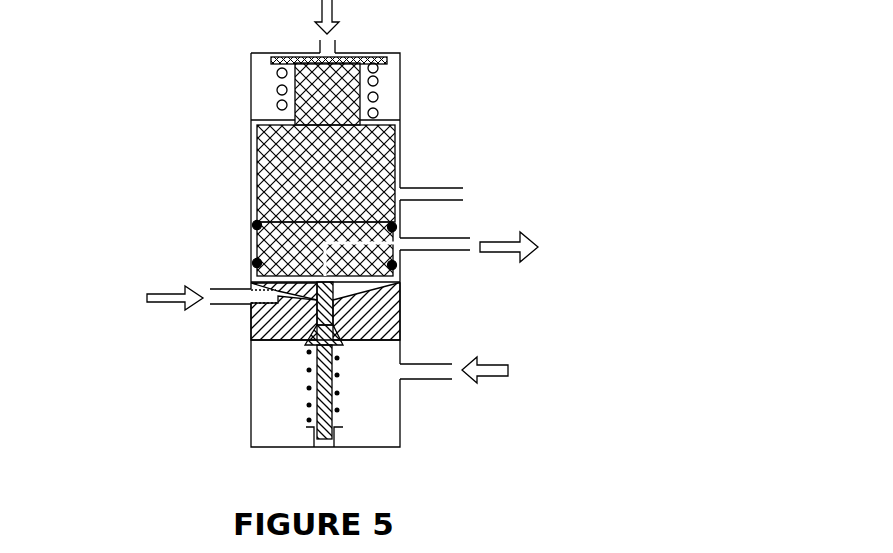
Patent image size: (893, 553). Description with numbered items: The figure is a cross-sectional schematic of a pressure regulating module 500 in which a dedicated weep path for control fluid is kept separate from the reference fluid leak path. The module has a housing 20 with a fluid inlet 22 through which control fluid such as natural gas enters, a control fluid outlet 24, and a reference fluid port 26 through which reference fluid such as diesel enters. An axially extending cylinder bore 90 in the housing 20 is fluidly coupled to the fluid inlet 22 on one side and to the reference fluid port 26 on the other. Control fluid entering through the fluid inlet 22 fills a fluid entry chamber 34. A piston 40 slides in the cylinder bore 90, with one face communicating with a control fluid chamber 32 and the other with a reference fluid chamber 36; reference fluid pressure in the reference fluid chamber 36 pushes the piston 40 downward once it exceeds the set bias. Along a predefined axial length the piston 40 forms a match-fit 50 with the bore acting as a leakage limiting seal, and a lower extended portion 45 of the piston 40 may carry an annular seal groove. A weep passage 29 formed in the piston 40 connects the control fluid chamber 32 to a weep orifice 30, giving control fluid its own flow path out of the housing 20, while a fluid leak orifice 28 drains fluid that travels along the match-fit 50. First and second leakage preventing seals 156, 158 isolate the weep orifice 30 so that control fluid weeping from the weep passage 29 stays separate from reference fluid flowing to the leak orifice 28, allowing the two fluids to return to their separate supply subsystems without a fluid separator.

The pressure regulating module 500 is at (82, 128).
The housing 20 is at (244, 380).
The fluid inlet 22 is at (420, 380).
The control fluid outlet 24 is at (222, 288).
The reference fluid port 26 is at (338, 46).
The fluid leak orifice 28 is at (446, 172).
The weep passage 29 is at (325, 252).
The weep orifice 30 is at (468, 240).
The control fluid chamber 32 is at (386, 283).
The fluid entry chamber 34 is at (385, 434).
The reference fluid chamber 36 is at (388, 75).
The piston 40 is at (400, 142).
The lower extended portion 45 is at (252, 252).
The match-fit 50 is at (236, 166).
The cylinder bore 90 is at (310, 428).
The first leakage preventing seal 156 is at (397, 226).
The second leakage preventing seal 158 is at (397, 266).